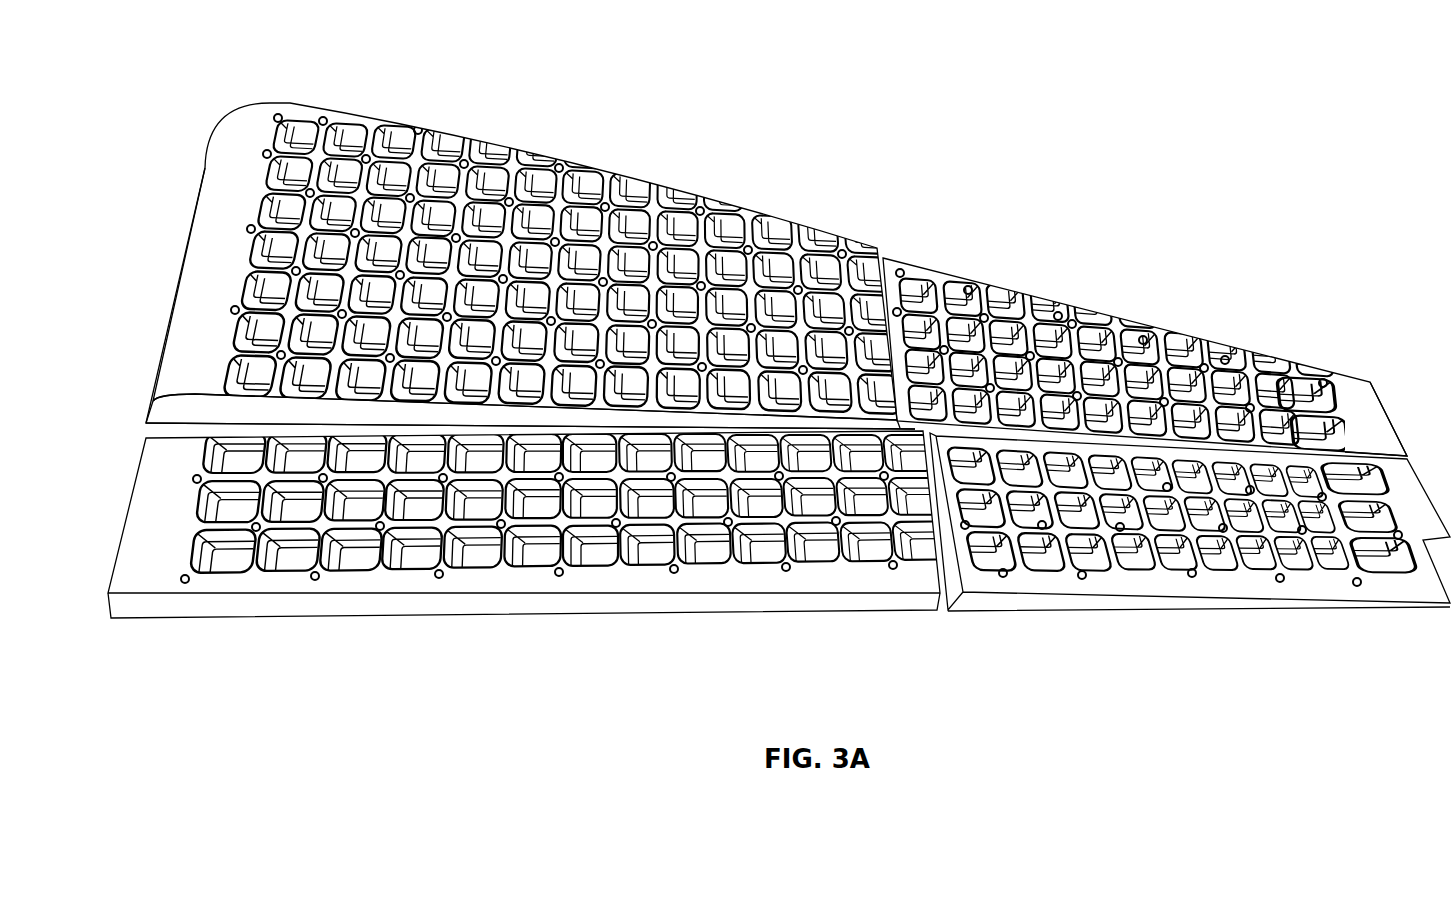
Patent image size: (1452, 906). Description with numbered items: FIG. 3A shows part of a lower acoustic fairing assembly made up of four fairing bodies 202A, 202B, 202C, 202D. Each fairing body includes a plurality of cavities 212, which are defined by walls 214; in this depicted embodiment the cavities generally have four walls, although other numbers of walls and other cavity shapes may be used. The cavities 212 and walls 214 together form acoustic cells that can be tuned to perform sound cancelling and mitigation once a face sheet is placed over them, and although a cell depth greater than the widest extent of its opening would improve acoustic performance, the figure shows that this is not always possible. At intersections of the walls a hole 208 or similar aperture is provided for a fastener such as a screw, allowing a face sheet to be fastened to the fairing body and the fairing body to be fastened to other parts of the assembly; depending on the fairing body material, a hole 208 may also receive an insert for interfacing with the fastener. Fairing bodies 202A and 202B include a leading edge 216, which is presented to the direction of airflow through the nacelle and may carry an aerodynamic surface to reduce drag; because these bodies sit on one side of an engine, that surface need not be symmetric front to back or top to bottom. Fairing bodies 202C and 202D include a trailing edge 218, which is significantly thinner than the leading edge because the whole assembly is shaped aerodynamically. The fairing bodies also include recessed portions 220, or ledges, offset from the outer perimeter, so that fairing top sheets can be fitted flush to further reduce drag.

The fairing body 202A is at (687, 205).
The fairing body 202B is at (598, 576).
The fairing body 202C is at (1186, 344).
The fairing body 202D is at (1098, 578).
The hole 208 is at (514, 198).
The cavity 212 is at (267, 207).
The wall 214 is at (293, 157).
The leading edge 216 is at (198, 300).
The trailing edge 218 is at (1351, 394).
The recessed portion 220 is at (207, 383).